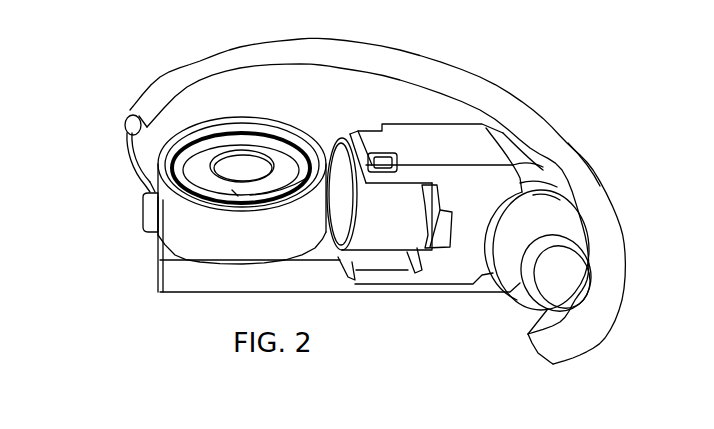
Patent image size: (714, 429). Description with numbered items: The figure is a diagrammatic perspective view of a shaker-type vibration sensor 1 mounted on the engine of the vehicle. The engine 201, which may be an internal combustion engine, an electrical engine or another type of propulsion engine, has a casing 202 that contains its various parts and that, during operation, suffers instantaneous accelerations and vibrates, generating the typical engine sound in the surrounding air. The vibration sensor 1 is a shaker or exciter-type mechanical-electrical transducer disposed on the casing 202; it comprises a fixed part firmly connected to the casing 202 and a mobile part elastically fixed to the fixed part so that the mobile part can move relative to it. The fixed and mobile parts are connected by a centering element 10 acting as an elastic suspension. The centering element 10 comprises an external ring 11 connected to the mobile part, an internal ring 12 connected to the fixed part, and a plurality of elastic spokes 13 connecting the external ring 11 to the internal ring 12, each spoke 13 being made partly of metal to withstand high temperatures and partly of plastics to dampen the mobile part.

The vibration sensor 1 is at (243, 107).
The centering element 10 is at (190, 221).
The external ring 11 is at (215, 205).
The internal ring 12 is at (130, 118).
The elastic spokes 13 is at (195, 137).
The engine 201 is at (503, 298).
The casing 202 is at (361, 287).